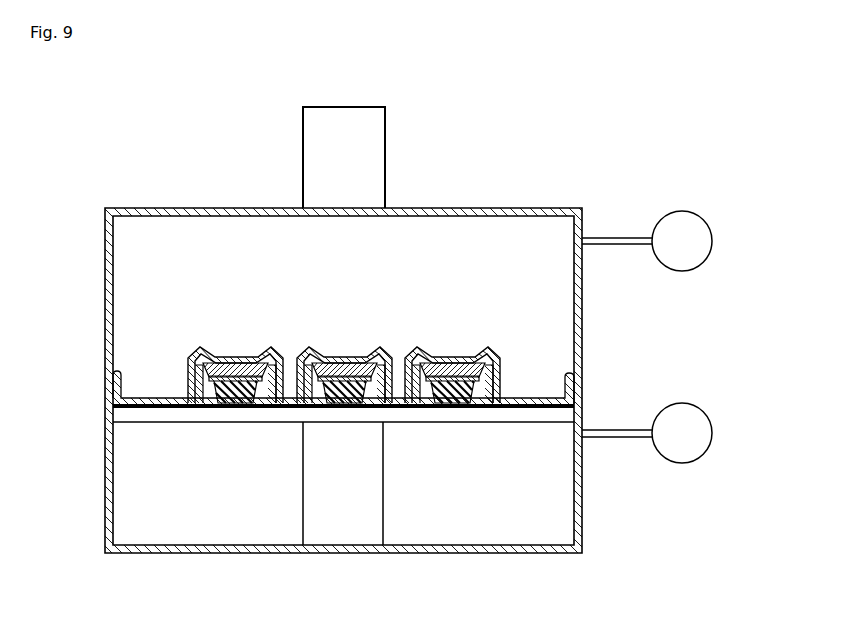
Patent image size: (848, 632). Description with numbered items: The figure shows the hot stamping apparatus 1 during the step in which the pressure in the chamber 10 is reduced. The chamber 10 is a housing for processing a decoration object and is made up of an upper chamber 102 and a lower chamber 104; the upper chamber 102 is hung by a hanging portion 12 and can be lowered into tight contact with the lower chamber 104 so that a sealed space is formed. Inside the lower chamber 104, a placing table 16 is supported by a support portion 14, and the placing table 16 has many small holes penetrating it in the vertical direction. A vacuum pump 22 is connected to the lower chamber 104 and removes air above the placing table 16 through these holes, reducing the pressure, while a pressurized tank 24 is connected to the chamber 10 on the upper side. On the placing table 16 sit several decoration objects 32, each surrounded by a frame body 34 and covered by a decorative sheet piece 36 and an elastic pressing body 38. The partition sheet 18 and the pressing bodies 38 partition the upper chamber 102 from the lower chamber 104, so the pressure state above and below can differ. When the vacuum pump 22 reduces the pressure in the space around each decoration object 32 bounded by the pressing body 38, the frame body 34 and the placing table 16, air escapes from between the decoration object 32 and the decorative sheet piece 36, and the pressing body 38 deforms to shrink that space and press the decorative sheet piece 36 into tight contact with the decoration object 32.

The hot stamping apparatus 1 is at (572, 144).
The chamber 10 is at (714, 344).
The hanging portion 12 is at (303, 128).
The support portion 14 is at (384, 497).
The placing table 16 is at (484, 421).
The partition sheet 18 is at (470, 354).
The vacuum pump 22 is at (712, 420).
The pressurized tank 24 is at (712, 228).
The decoration object 32 is at (258, 409).
The frame body 34 is at (200, 409).
The decorative sheet piece 36 is at (238, 358).
The pressing body 38 is at (193, 357).
The upper chamber 102 is at (582, 296).
The lower chamber 104 is at (582, 394).